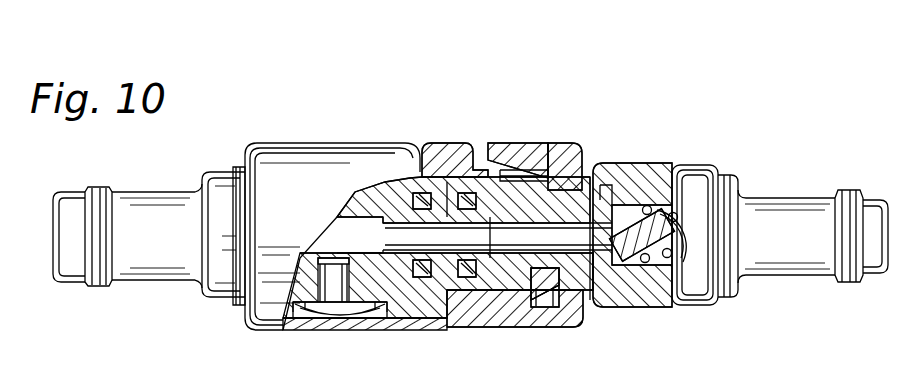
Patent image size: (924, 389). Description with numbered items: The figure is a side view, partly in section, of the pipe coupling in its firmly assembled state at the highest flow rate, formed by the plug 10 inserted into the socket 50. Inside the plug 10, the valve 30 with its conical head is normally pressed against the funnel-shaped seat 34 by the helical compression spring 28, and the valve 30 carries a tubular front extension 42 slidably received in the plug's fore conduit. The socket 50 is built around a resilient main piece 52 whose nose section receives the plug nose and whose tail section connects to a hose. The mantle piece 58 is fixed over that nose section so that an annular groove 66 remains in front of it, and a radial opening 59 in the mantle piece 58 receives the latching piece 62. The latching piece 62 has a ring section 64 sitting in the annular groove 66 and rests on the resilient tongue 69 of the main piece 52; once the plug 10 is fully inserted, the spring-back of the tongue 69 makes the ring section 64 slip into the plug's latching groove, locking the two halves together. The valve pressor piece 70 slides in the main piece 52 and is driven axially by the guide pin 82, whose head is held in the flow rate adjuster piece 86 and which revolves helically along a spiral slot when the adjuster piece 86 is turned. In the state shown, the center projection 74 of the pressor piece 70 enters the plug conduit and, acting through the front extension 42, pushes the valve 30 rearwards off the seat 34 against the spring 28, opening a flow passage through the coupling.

The plug 10 is at (767, 183).
The helical compression spring 28 is at (728, 300).
The valve 30 is at (653, 307).
The funnel-shaped seat 34 is at (607, 187).
The tubular front extension 42 is at (604, 300).
The socket 50 is at (198, 167).
The main piece 52 is at (158, 267).
The mantle piece 58 is at (489, 328).
The radial opening 59 is at (473, 150).
The latching piece 62 is at (512, 153).
The ring section 64 is at (567, 307).
The annular groove 66 is at (547, 302).
The tongue 69 is at (535, 172).
The valve pressor piece 70 is at (390, 320).
The center projection 74 is at (445, 320).
The guide pin 82 is at (333, 320).
The flow rate adjuster piece 86 is at (295, 155).